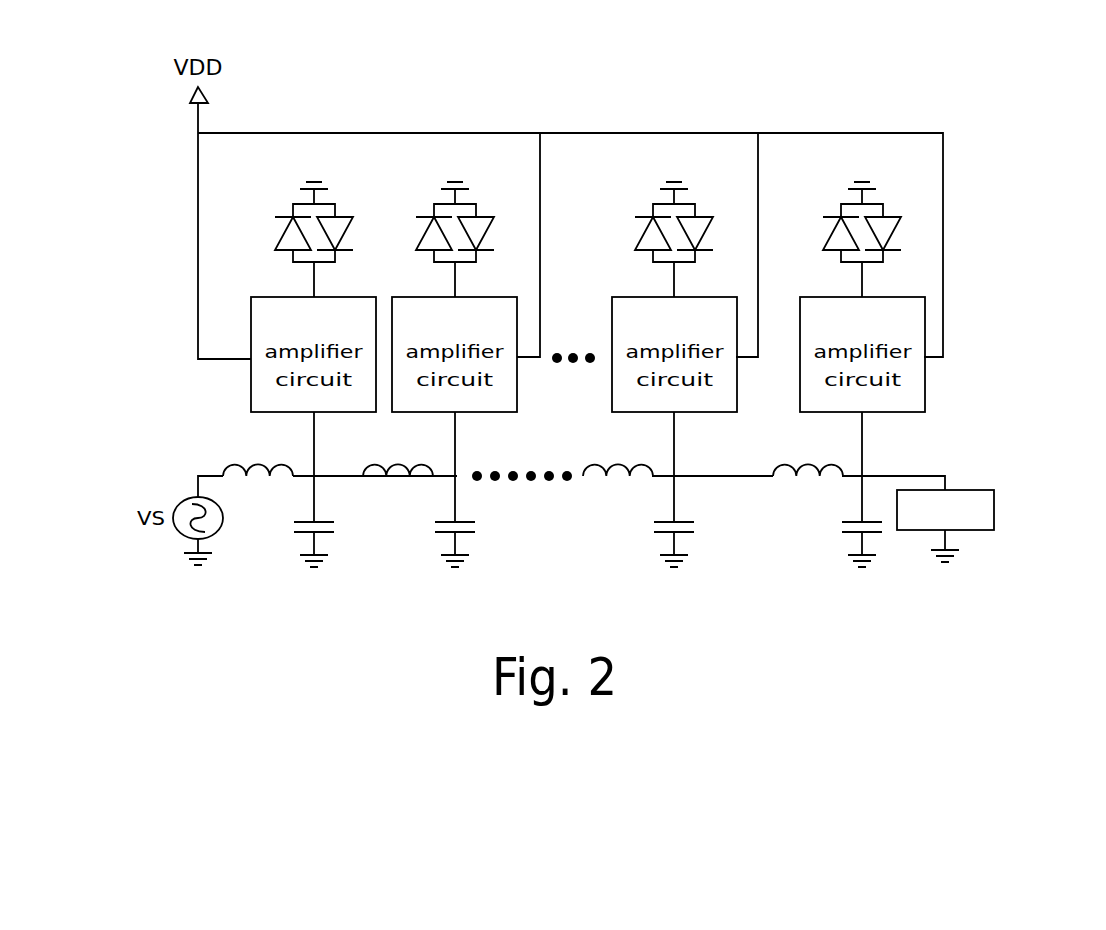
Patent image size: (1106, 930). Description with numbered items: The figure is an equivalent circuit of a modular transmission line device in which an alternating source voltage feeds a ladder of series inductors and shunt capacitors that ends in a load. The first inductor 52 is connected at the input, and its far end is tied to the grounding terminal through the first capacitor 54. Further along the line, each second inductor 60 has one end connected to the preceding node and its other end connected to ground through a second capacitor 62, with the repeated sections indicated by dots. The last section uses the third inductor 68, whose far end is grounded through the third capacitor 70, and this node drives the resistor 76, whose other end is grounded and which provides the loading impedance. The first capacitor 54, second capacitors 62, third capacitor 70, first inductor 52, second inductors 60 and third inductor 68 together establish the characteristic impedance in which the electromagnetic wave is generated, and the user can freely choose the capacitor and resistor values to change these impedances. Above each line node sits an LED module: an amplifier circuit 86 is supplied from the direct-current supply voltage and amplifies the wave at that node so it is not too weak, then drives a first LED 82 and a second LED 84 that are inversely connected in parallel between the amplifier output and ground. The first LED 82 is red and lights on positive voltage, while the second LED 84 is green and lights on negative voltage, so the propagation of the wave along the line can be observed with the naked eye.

The first inductor 52 is at (247, 472).
The first capacitor 54 is at (332, 535).
The second inductor 60 is at (412, 472).
The second capacitor 62 is at (470, 535).
The third inductor 68 is at (793, 472).
The third capacitor 70 is at (878, 535).
The resistor 76 is at (994, 505).
The first LED 82 is at (281, 232).
The second LED 84 is at (348, 214).
The amplifier circuit 86 is at (251, 387).